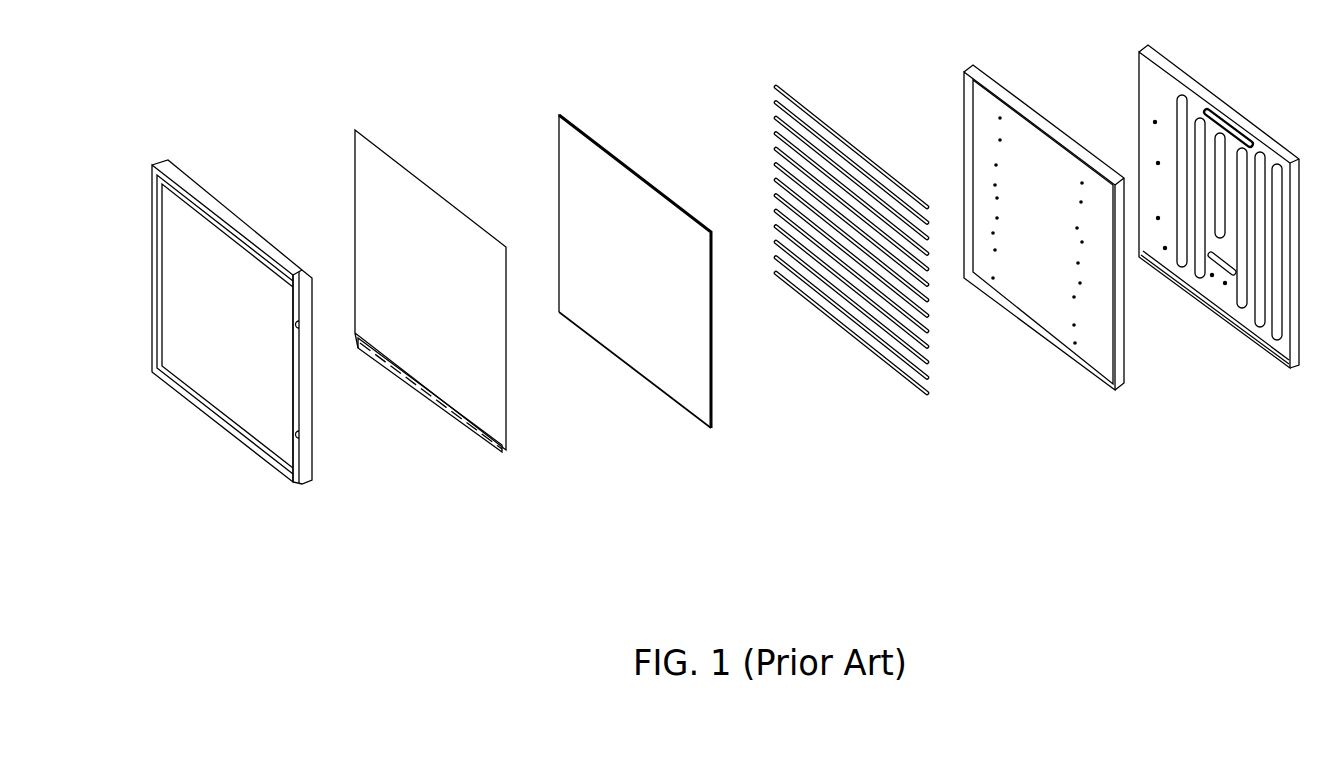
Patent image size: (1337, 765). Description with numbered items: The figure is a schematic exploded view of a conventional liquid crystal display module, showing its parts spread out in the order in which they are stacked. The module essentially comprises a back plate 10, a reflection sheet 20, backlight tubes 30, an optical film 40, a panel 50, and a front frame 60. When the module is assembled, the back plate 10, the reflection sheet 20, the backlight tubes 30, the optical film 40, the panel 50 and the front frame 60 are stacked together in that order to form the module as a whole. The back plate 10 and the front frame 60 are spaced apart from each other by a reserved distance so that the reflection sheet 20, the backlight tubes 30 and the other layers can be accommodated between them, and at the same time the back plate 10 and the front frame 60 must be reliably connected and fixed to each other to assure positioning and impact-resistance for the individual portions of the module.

The back plate 10 is at (1282, 369).
The reflection sheet 20 is at (1083, 372).
The backlight tubes 30 is at (927, 395).
The optical film 40 is at (702, 428).
The panel 50 is at (493, 453).
The front frame 60 is at (293, 485).